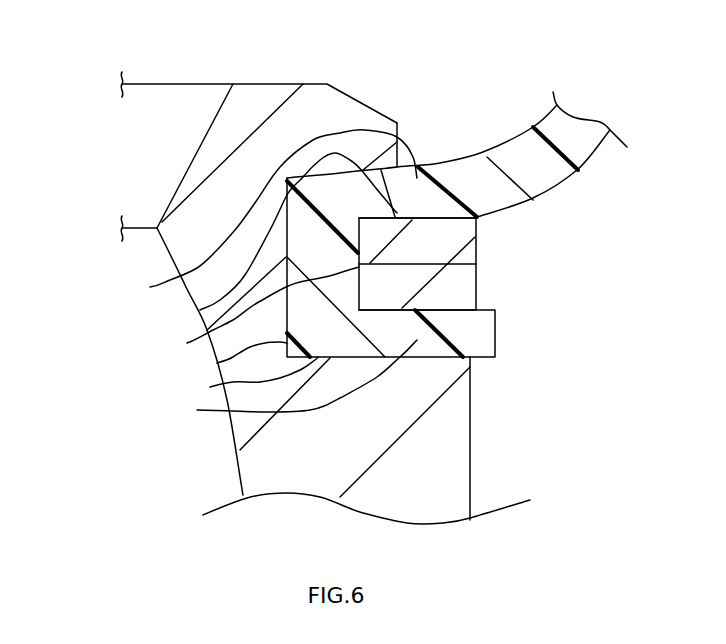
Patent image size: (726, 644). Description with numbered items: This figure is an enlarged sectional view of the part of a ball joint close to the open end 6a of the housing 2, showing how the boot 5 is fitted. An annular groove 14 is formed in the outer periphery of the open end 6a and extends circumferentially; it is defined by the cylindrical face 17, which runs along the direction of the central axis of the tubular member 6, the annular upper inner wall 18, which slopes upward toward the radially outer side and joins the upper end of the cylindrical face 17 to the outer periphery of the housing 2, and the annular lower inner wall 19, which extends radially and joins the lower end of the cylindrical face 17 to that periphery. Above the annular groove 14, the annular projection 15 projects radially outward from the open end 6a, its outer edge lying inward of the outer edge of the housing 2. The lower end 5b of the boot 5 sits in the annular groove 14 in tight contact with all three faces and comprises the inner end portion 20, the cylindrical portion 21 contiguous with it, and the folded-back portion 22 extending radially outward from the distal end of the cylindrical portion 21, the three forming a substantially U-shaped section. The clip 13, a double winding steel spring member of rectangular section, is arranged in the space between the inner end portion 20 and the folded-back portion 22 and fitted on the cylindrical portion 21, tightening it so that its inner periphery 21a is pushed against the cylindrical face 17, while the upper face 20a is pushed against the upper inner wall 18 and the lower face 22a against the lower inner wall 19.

The housing 2 is at (472, 415).
The boot 5 is at (593, 157).
The lower end of the boot 5b is at (86, 268).
The tubular member 6 is at (450, 464).
The open end 6a is at (215, 117).
The clip 13 is at (478, 293).
The annular groove 14 is at (553, 208).
The annular projection 15 is at (355, 113).
The cylindrical face 17 is at (345, 306).
The upper inner wall 18 is at (397, 213).
The lower inner wall 19 is at (420, 357).
The inner end portion 20 is at (150, 287).
The upper face 20a is at (200, 310).
The cylindrical portion 21 is at (187, 343).
The inner periphery 21a is at (217, 363).
The folded-back portion 22 is at (197, 410).
The lower face 22a is at (210, 387).